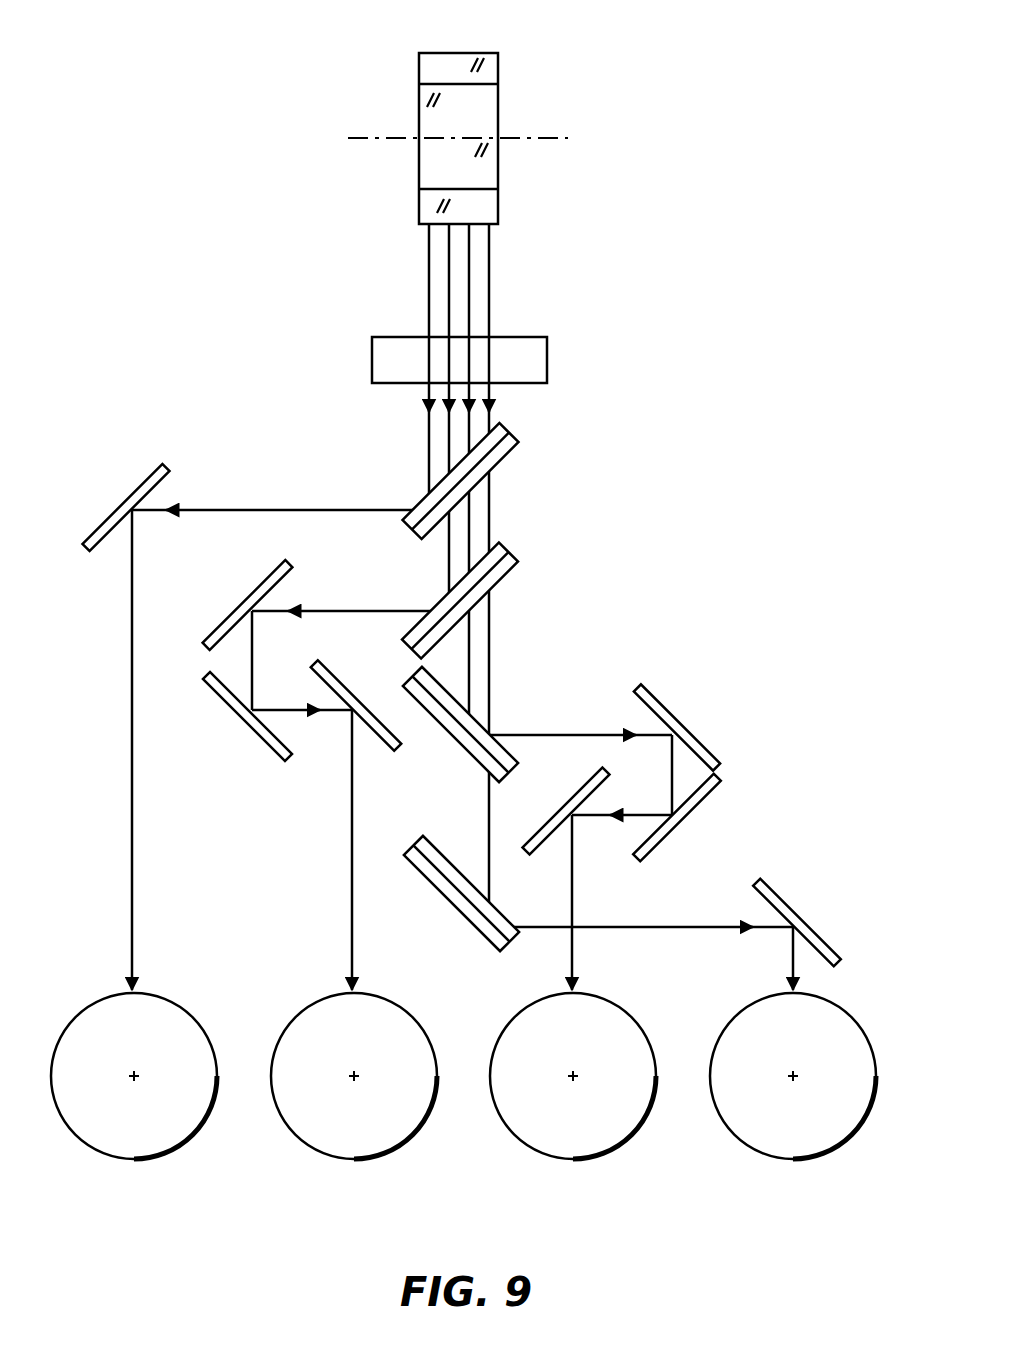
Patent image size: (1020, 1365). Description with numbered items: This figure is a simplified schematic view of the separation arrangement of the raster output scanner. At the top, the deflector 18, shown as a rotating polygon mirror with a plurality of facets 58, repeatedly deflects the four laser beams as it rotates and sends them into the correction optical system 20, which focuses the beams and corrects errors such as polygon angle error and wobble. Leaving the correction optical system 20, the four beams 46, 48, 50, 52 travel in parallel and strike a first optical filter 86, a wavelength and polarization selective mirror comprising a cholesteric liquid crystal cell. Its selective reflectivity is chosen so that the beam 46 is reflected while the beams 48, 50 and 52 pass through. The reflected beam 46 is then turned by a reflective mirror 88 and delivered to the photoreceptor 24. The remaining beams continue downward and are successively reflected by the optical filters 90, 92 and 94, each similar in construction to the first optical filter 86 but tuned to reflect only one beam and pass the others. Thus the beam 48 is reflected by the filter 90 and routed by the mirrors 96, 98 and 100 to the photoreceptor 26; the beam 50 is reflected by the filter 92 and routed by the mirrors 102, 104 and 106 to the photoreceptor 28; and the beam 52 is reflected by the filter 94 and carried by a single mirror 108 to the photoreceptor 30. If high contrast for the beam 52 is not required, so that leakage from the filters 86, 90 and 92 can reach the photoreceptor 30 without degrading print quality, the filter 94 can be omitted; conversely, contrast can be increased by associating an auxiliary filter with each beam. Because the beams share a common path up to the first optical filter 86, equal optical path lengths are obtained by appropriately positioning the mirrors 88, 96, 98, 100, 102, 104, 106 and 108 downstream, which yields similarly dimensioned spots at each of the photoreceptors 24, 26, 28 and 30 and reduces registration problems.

The deflector 18 is at (425, 40).
The facets 58 is at (486, 67).
The correction optical system 20 is at (563, 356).
The beam 46 is at (429, 270).
The beam 48 is at (449, 242).
The beam 50 is at (469, 242).
The beam 52 is at (489, 270).
The first optical filter 86 is at (513, 425).
The optical filter 90 is at (513, 545).
The optical filter 92 is at (453, 745).
The optical filter 94 is at (438, 897).
The reflective mirror 88 is at (102, 518).
The mirror 96 is at (230, 613).
The mirror 98 is at (227, 700).
The mirror 100 is at (328, 677).
The mirror 102 is at (695, 733).
The mirror 104 is at (700, 803).
The mirror 106 is at (592, 777).
The mirror 108 is at (835, 935).
The photoreceptor 24 is at (177, 1147).
The photoreceptor 26 is at (397, 1147).
The photoreceptor 28 is at (616, 1147).
The photoreceptor 30 is at (836, 1147).